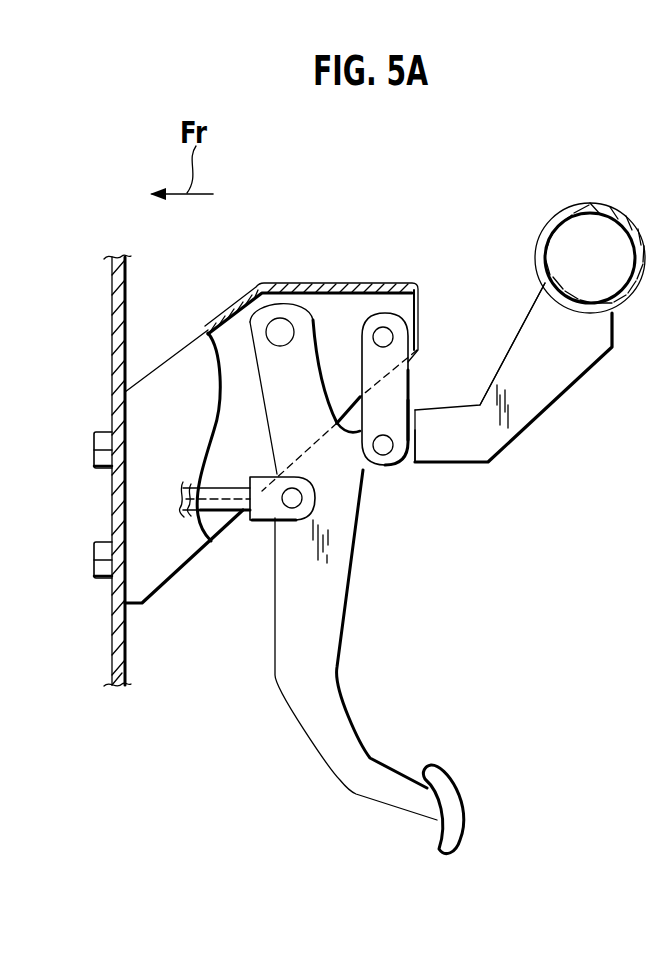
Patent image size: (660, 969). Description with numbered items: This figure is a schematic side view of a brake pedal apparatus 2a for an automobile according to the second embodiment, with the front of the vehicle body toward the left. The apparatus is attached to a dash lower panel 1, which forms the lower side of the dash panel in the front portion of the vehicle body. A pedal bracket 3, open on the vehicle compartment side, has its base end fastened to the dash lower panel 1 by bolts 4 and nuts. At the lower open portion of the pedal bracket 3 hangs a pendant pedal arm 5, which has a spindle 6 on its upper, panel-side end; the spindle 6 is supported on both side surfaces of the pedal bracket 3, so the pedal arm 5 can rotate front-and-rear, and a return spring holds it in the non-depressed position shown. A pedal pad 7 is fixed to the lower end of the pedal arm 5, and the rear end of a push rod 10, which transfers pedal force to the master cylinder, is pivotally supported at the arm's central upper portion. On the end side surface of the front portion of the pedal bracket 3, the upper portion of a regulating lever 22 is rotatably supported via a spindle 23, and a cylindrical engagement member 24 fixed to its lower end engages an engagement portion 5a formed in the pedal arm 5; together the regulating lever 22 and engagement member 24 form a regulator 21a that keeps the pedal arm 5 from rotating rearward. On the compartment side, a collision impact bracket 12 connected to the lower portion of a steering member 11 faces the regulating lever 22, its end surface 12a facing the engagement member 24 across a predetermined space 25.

The dash lower panel 1 is at (112, 640).
The brake pedal apparatus 2a is at (428, 221).
The pedal bracket 3 is at (172, 355).
The bolts 4 is at (94, 443).
The pedal arm 5 is at (275, 640).
The engagement portion 5a is at (363, 470).
The spindle 6 is at (283, 330).
The pedal pad 7 is at (447, 780).
The push rod 10 is at (280, 523).
The steering member 11 is at (592, 203).
The collision impact bracket 12 is at (470, 463).
The end surface 12a is at (418, 466).
The regulator 21a is at (438, 353).
The regulating lever 22 is at (413, 406).
The spindle 23 is at (385, 327).
The engagement member 24 is at (385, 456).
The predetermined space 25 is at (416, 402).